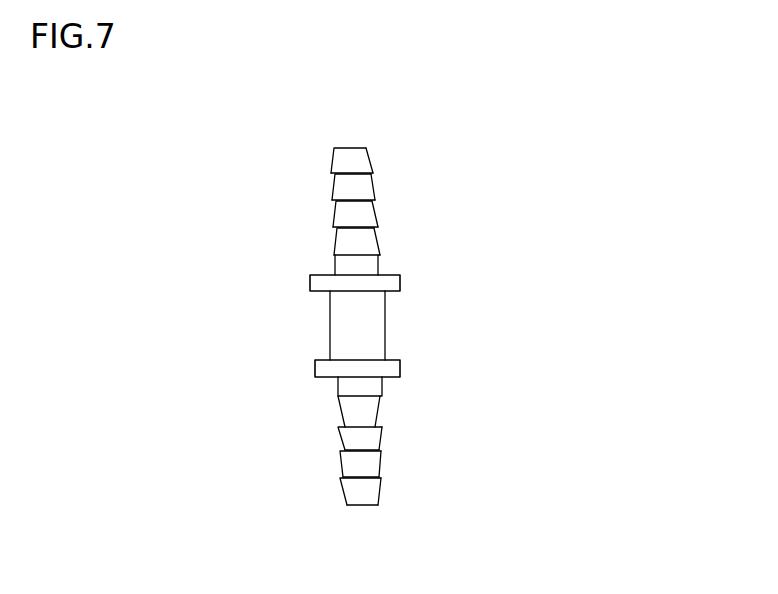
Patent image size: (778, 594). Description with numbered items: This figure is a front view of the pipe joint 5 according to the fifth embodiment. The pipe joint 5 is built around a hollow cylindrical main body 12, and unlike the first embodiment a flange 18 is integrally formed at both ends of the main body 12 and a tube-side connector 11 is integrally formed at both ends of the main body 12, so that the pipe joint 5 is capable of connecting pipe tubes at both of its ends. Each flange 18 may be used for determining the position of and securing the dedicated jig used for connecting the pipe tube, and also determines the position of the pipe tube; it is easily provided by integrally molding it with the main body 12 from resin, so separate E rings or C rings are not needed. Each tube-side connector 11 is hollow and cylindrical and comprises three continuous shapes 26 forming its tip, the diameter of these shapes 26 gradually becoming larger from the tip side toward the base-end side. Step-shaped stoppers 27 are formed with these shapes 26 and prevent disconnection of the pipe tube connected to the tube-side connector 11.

The pipe joint 5 is at (587, 202).
The tube-side connector 11 is at (372, 186).
The main body 12 is at (330, 325).
The flange 18 is at (400, 282).
The continuous shapes 26 is at (341, 158).
The stoppers 27 is at (373, 177).